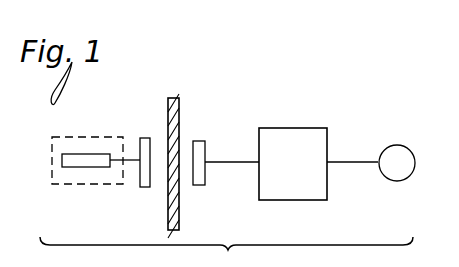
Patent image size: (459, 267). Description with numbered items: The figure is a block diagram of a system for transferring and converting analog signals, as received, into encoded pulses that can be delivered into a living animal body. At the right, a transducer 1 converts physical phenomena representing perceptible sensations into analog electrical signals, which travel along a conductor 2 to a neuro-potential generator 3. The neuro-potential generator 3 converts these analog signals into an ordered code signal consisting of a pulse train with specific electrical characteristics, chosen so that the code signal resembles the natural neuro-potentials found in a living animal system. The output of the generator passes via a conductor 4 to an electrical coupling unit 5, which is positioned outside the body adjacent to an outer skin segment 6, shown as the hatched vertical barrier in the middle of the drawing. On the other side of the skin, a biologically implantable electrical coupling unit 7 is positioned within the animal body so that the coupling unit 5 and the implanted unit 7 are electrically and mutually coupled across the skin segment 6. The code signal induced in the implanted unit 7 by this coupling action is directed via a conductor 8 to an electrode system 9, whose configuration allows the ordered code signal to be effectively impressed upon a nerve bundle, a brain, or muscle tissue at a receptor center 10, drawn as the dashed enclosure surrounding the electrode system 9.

The transducer 1 is at (399, 147).
The conductor 2 is at (350, 165).
The neuro-potential generator 3 is at (328, 133).
The conductor 4 is at (241, 141).
The electrical coupling unit 5 is at (197, 140).
The outer skin segment 6 is at (180, 115).
The biologically implantable electrical coupling unit 7 is at (146, 187).
The conductor 8 is at (133, 158).
The electrode system 9 is at (93, 174).
The receptor center 10 is at (60, 187).